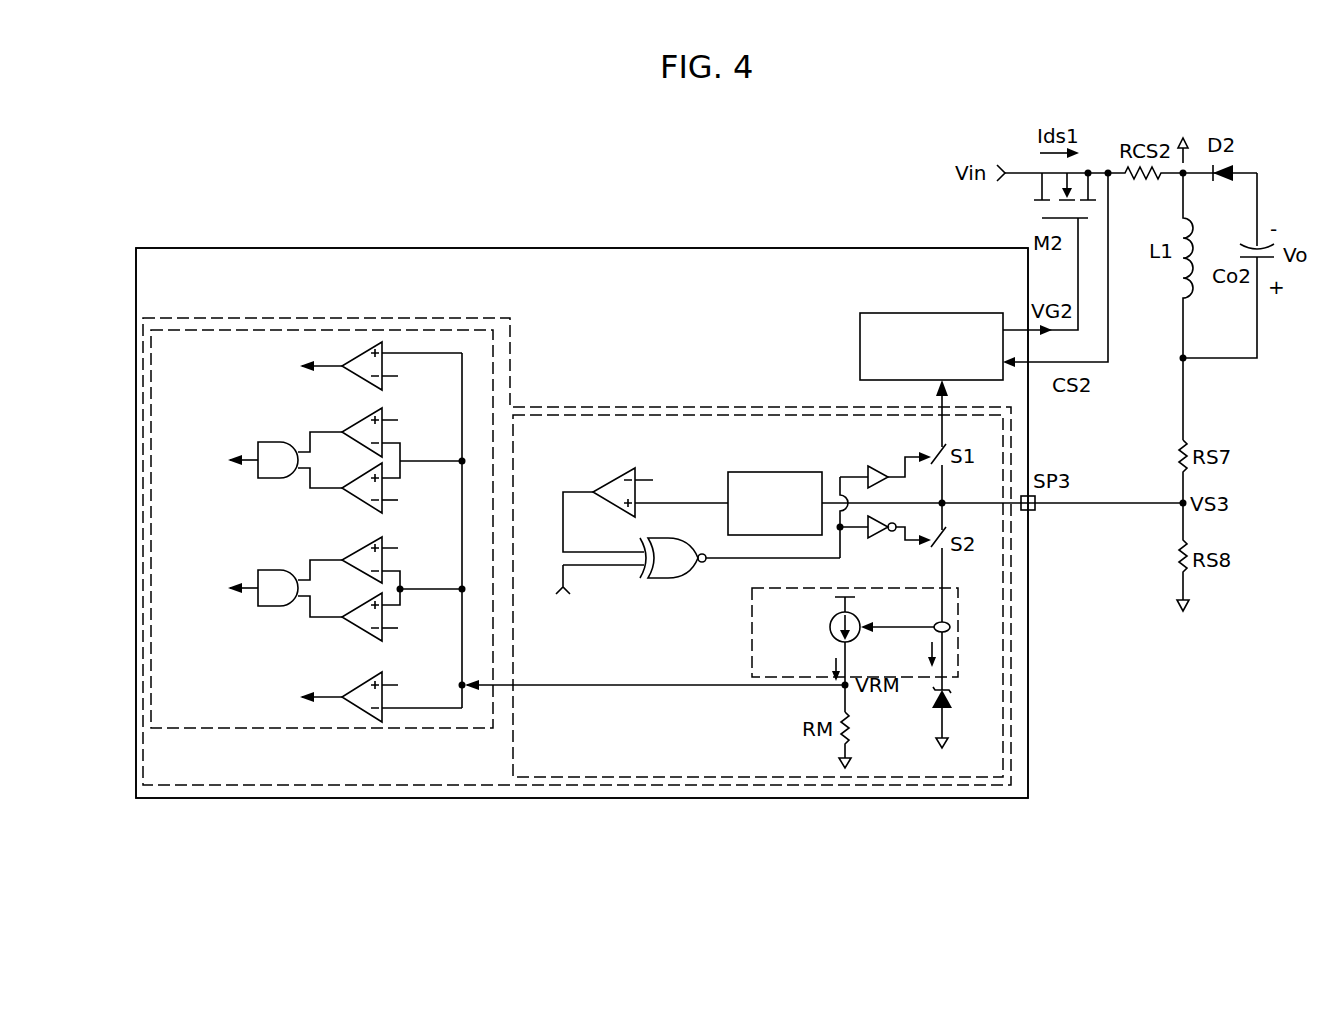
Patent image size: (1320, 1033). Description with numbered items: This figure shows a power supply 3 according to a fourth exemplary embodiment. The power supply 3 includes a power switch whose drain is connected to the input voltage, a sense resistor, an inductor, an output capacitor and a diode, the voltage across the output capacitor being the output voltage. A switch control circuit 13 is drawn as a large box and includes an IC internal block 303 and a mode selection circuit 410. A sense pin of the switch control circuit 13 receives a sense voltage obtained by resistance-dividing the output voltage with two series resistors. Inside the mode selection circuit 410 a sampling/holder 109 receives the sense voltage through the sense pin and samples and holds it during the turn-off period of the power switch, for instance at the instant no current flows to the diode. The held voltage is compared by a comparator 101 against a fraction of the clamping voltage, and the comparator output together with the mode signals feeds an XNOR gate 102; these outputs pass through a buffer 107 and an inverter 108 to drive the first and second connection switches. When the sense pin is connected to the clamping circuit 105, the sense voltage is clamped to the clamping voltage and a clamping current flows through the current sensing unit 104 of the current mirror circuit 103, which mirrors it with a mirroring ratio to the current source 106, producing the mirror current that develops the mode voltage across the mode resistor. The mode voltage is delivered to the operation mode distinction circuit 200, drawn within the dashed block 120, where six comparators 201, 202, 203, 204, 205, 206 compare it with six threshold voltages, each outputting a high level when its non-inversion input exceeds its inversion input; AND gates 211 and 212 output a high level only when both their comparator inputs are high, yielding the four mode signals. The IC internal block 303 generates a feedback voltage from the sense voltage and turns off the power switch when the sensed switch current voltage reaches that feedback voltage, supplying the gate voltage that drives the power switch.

The power supply 3 is at (240, 212).
The switch control circuit 13 is at (828, 248).
The comparator 101 is at (622, 468).
The XNOR gate 102 is at (684, 580).
The current mirror circuit 103 is at (752, 647).
The current sensing unit 104 is at (952, 623).
The clamping circuit 105 is at (954, 712).
The current source 106 is at (830, 627).
The buffer 107 is at (868, 468).
The inverter 108 is at (876, 542).
The sampling/holder 109 is at (762, 472).
The mode voltage generator and operation mode distinction circuit block 120 is at (510, 752).
The operation mode distinction circuit 200 is at (322, 728).
The comparator 201 is at (357, 686).
The comparator 202 is at (357, 626).
The comparator 203 is at (357, 548).
The comparator 204 is at (357, 497).
The comparator 205 is at (360, 421).
The comparator 206 is at (355, 378).
The AND gate 211 is at (270, 606).
The AND gate 212 is at (270, 478).
The IC internal block 303 is at (958, 313).
The mode selection circuit 410 is at (688, 407).